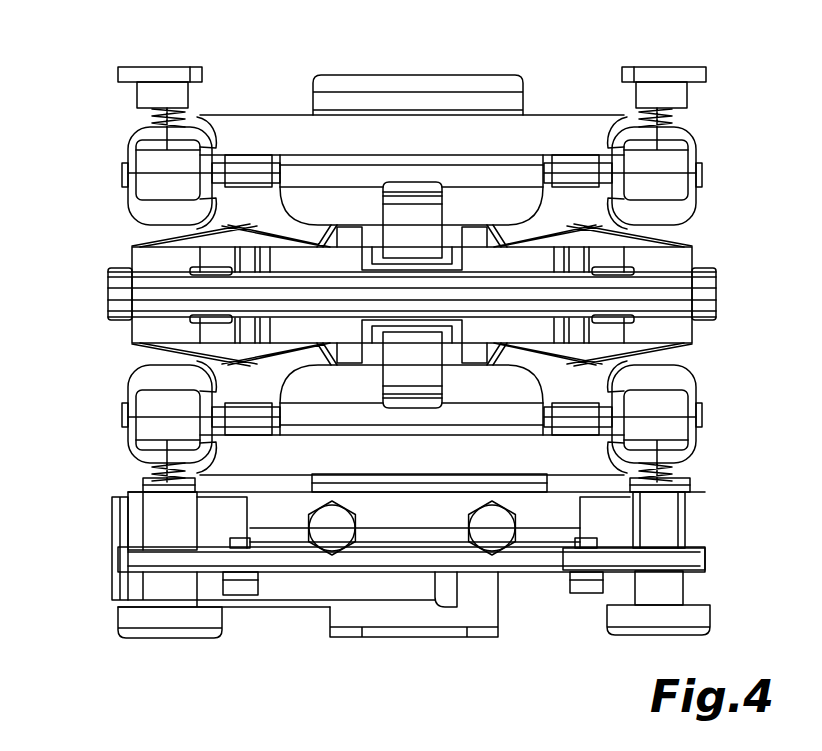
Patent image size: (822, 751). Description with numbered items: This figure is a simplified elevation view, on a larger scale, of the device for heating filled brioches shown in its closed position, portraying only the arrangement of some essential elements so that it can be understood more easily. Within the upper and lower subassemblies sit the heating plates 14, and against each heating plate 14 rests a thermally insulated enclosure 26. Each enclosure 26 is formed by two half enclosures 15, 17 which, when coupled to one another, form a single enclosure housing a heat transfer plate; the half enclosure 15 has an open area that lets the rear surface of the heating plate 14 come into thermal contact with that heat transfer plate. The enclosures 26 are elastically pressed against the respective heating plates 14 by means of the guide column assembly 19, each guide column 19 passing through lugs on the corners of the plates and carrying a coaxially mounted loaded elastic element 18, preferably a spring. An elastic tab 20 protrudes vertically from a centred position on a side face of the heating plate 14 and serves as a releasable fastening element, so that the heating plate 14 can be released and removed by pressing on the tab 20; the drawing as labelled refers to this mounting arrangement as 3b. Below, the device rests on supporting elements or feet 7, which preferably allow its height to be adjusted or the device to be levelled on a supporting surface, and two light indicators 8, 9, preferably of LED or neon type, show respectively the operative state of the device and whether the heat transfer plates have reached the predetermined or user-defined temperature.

The adjusting bolt 3b is at (143, 72).
The half enclosure 15 is at (262, 202).
The half enclosure 17 is at (590, 120).
The thermally insulated enclosure 26 is at (98, 105).
The heating plate 14 is at (683, 258).
The elastic tab 20 is at (412, 295).
The guide column 19 is at (718, 436).
The loaded elastic element 18 is at (683, 453).
The supporting elements or feet 7 is at (687, 618).
The light indicator 8 is at (325, 543).
The light indicator 9 is at (500, 542).